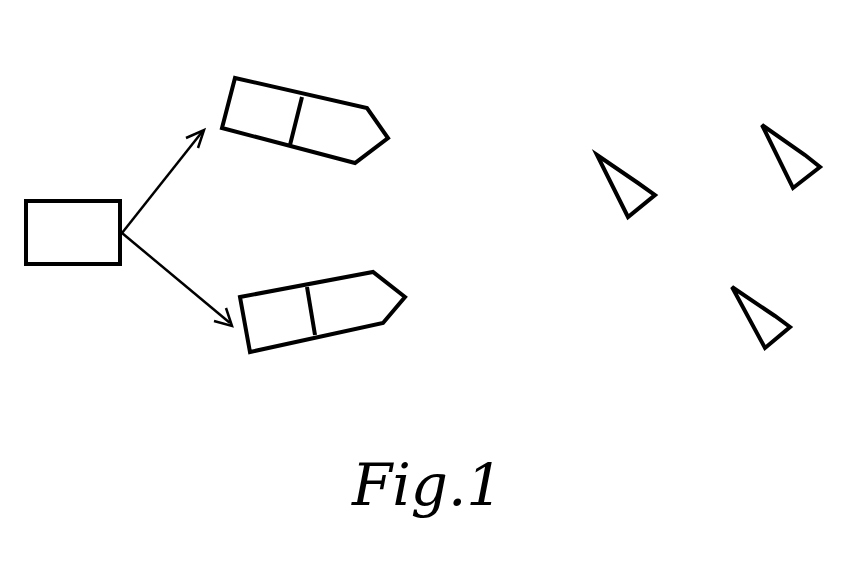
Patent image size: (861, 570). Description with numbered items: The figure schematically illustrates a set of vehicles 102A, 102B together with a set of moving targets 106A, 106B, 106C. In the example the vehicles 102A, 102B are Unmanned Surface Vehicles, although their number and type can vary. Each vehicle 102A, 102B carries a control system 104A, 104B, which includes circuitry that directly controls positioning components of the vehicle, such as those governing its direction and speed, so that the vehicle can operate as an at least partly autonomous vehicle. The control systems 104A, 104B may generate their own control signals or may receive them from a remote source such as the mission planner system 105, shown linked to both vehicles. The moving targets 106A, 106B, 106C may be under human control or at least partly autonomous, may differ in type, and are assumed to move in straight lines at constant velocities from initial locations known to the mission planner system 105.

The mission planner system 105 is at (66, 225).
The vehicle 102A is at (305, 90).
The vehicle 102B is at (322, 281).
The control system 104A is at (265, 82).
The control system 104B is at (265, 292).
The moving target 106A is at (630, 175).
The moving target 106B is at (777, 132).
The moving target 106C is at (760, 298).